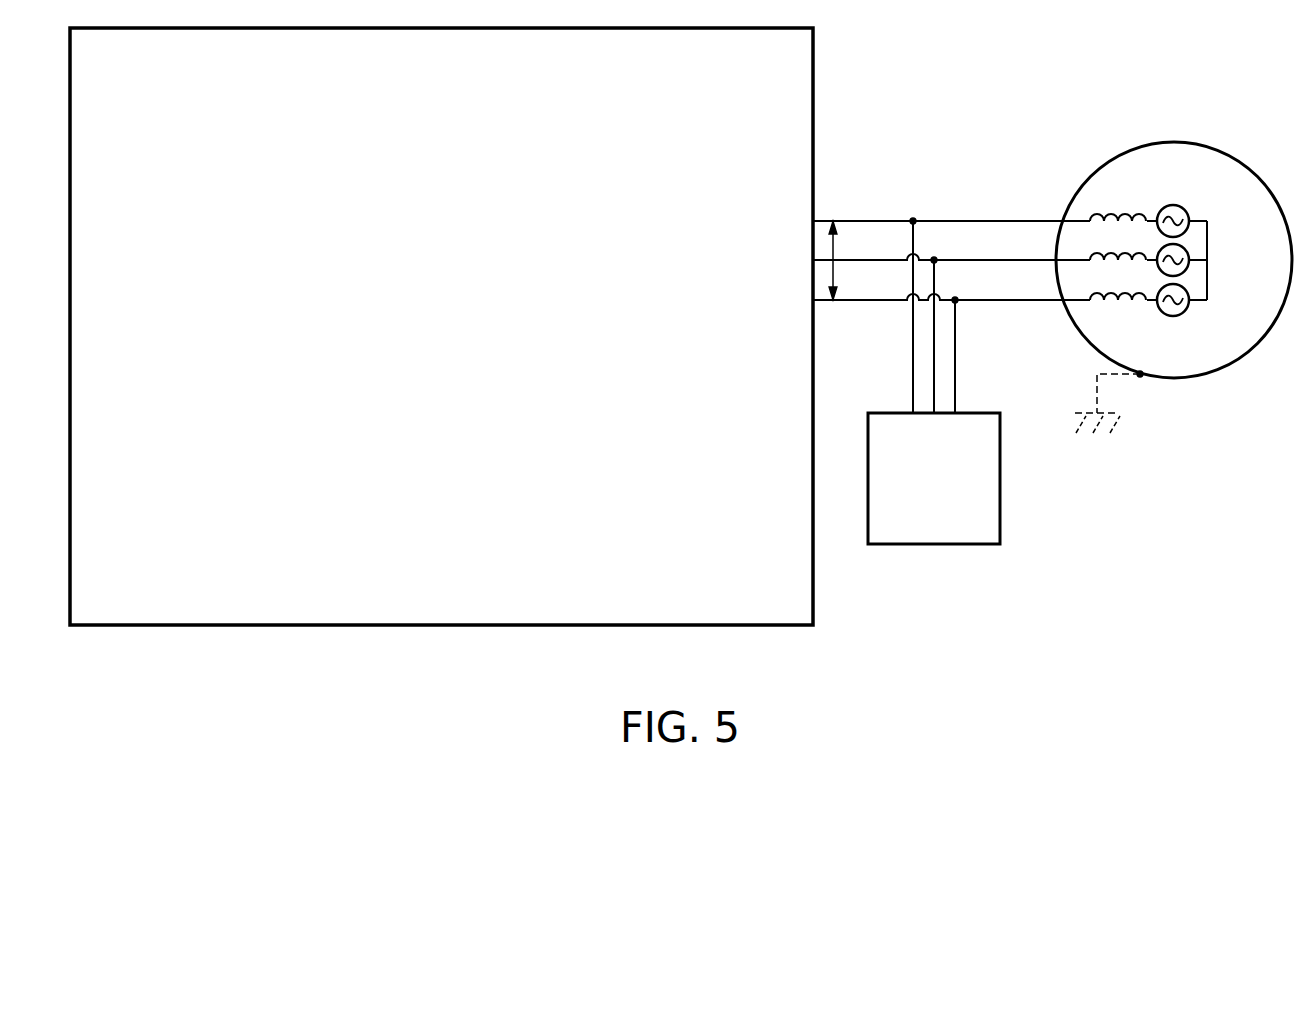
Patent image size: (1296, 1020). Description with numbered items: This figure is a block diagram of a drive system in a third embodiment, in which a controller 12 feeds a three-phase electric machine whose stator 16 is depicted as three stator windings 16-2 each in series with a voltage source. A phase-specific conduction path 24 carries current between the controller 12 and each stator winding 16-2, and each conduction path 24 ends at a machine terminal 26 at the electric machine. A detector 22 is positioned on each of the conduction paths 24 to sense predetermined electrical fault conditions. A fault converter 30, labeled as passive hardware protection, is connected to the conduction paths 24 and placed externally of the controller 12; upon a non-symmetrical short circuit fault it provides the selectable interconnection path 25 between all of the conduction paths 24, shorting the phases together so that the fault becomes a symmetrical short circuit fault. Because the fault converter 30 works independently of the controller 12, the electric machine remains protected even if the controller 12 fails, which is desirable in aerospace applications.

The controller 12 is at (351, 627).
The stator 16 is at (1190, 378).
The stator winding 16-2 is at (1110, 216).
The detector 22 is at (934, 260).
The conduction path 24 is at (973, 221).
The interconnection path 25 is at (833, 270).
The machine terminal 26 is at (1037, 221).
The fault converter 30 is at (1000, 478).